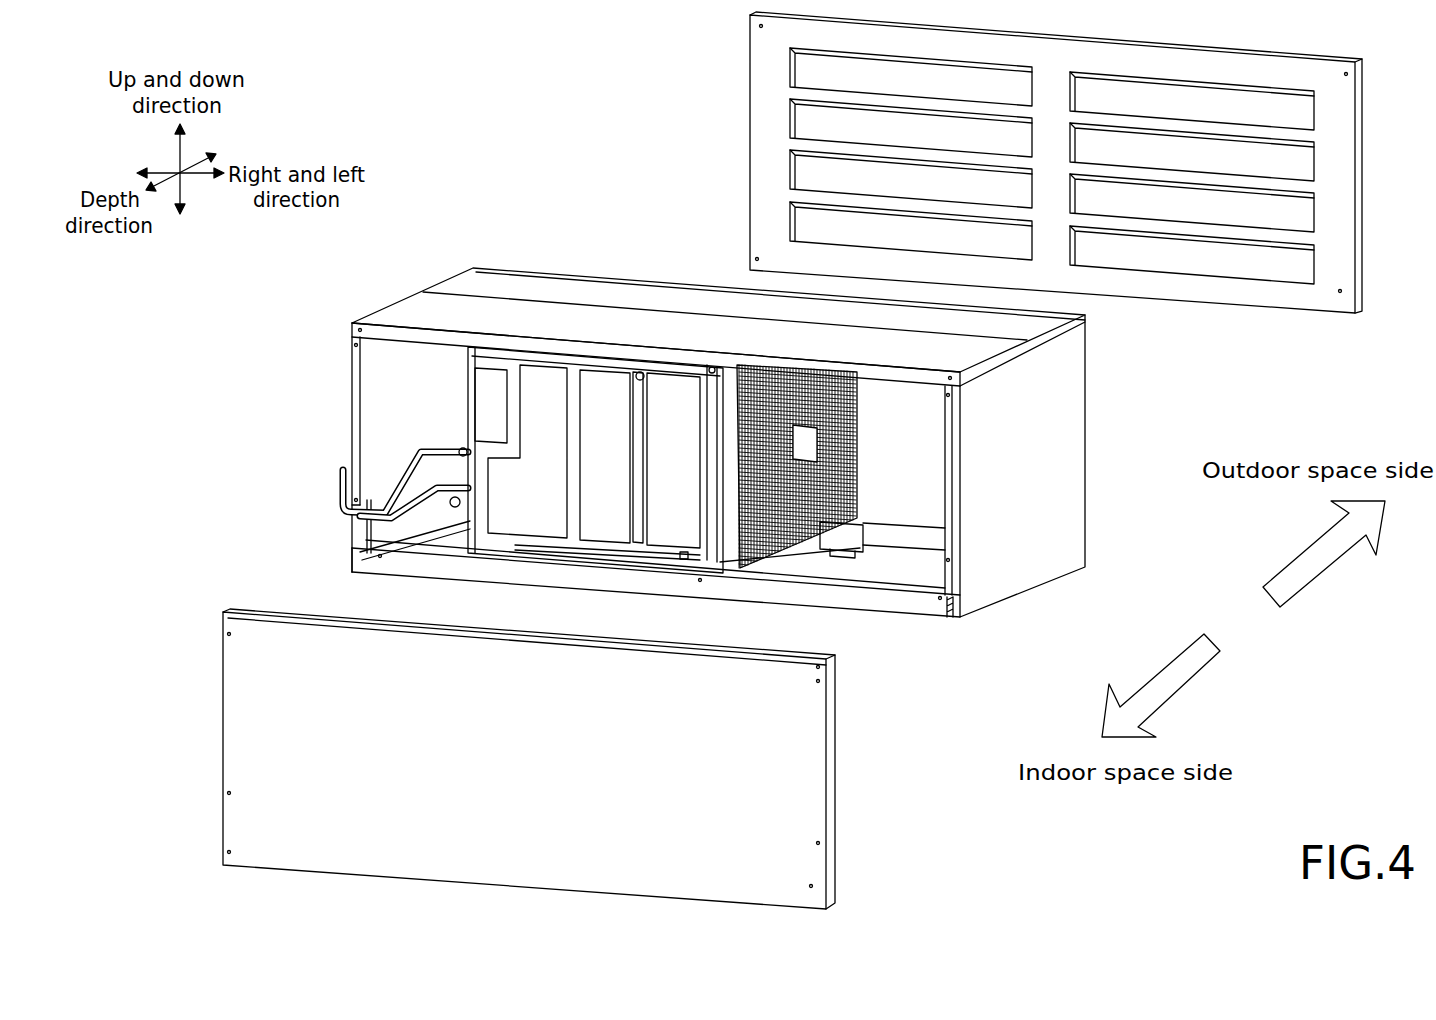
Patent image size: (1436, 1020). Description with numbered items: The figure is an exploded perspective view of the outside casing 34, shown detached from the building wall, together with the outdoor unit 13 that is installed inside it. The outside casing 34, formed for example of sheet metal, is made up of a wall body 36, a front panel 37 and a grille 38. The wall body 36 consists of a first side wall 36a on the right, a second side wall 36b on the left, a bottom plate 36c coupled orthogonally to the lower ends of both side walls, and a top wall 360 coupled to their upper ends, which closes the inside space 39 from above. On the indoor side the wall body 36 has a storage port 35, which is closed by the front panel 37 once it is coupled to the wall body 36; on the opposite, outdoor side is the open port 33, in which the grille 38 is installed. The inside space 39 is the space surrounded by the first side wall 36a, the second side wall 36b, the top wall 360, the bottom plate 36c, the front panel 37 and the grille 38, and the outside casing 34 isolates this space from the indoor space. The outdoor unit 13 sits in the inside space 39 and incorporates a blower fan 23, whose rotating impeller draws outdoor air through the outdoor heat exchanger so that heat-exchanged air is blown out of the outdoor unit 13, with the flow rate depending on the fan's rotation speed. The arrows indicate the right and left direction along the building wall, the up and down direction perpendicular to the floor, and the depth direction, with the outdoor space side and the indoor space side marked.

The outside casing 34 is at (454, 149).
The wall body 36 is at (408, 293).
The top wall 360 is at (604, 296).
The first side wall 36a is at (1073, 410).
The second side wall 36b is at (350, 375).
The bottom plate 36c is at (895, 615).
The storage port 35 is at (942, 477).
The open port 33 is at (907, 522).
The inside space 39 is at (421, 427).
The outdoor unit 13 is at (527, 487).
The blower fan 23 is at (858, 452).
The grille 38 is at (1283, 75).
The front panel 37 is at (786, 802).